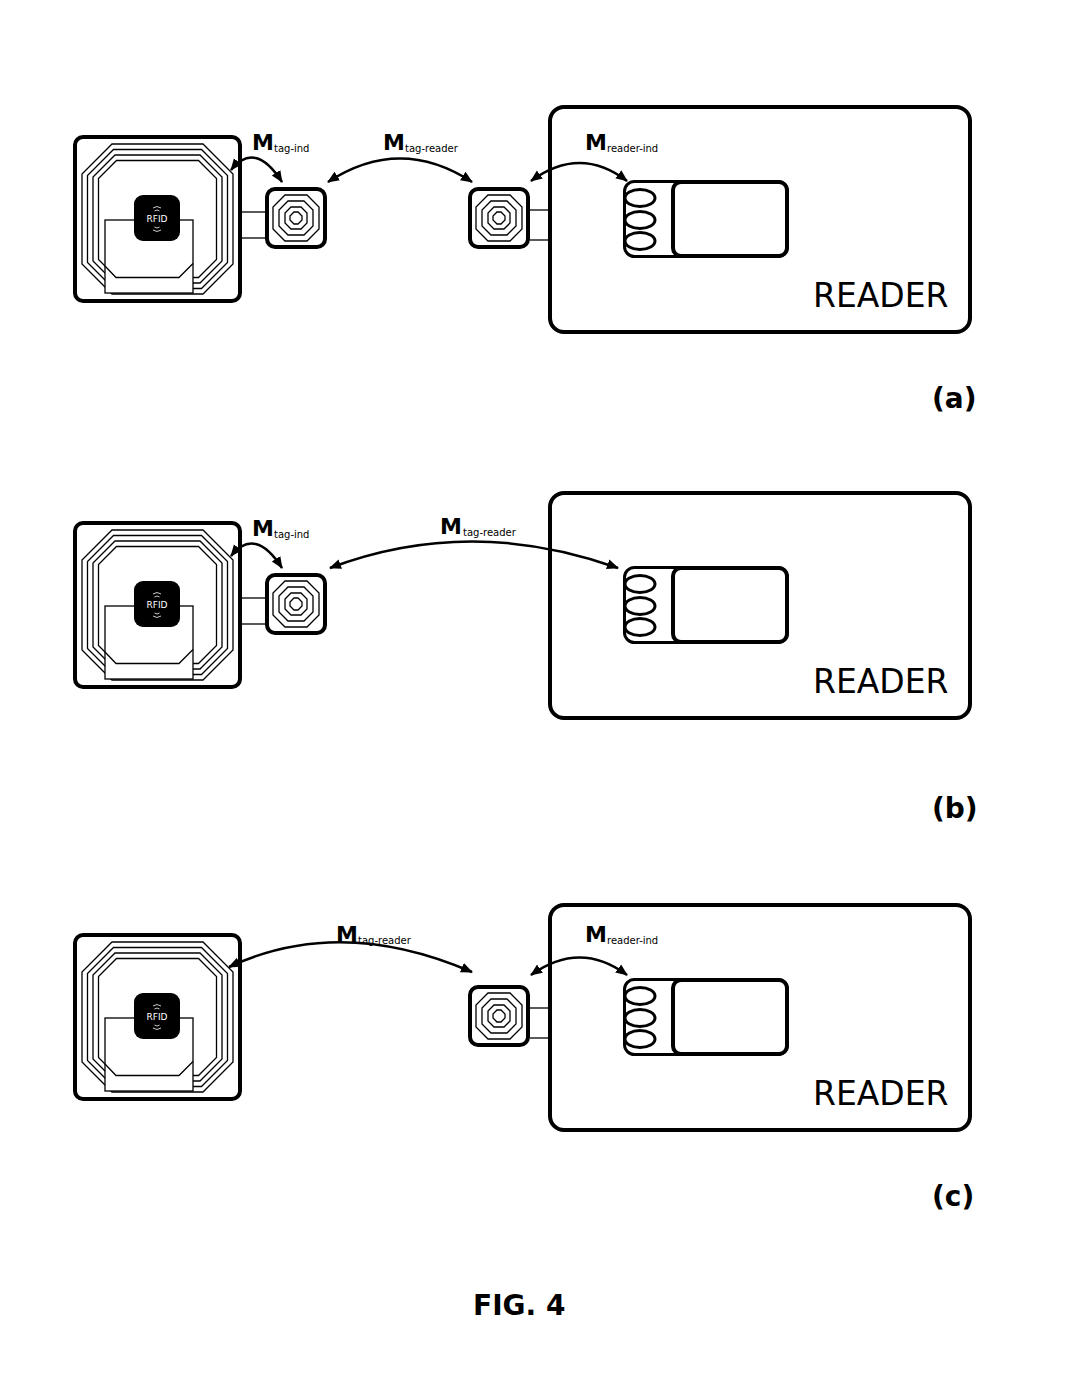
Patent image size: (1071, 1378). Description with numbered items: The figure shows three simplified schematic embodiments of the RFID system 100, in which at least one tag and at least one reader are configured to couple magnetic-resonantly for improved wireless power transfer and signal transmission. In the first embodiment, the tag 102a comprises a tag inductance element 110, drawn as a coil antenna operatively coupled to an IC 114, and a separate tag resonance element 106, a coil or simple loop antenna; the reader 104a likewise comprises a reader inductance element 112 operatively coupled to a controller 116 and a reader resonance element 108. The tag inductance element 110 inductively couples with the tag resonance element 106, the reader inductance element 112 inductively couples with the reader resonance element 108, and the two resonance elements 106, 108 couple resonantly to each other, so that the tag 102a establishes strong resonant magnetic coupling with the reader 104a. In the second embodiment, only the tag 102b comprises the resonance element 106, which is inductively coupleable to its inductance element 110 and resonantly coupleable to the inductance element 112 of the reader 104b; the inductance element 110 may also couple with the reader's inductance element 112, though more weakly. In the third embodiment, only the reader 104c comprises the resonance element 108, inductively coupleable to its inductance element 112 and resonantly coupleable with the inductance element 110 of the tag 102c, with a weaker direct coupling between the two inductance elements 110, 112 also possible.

The RFID system 100 is at (622, 27).
The tag 102a is at (181, 161).
The tag 102b is at (184, 563).
The tag 102c is at (182, 973).
The reader 104a is at (760, 184).
The reader 104b is at (727, 629).
The reader 104c is at (760, 986).
The tag resonance element 106 is at (295, 450).
The reader resonance element 108 is at (482, 657).
The tag inductance element 110 is at (146, 662).
The reader inductance element 112 is at (681, 625).
The IC 114 is at (138, 547).
The controller 116 is at (731, 619).